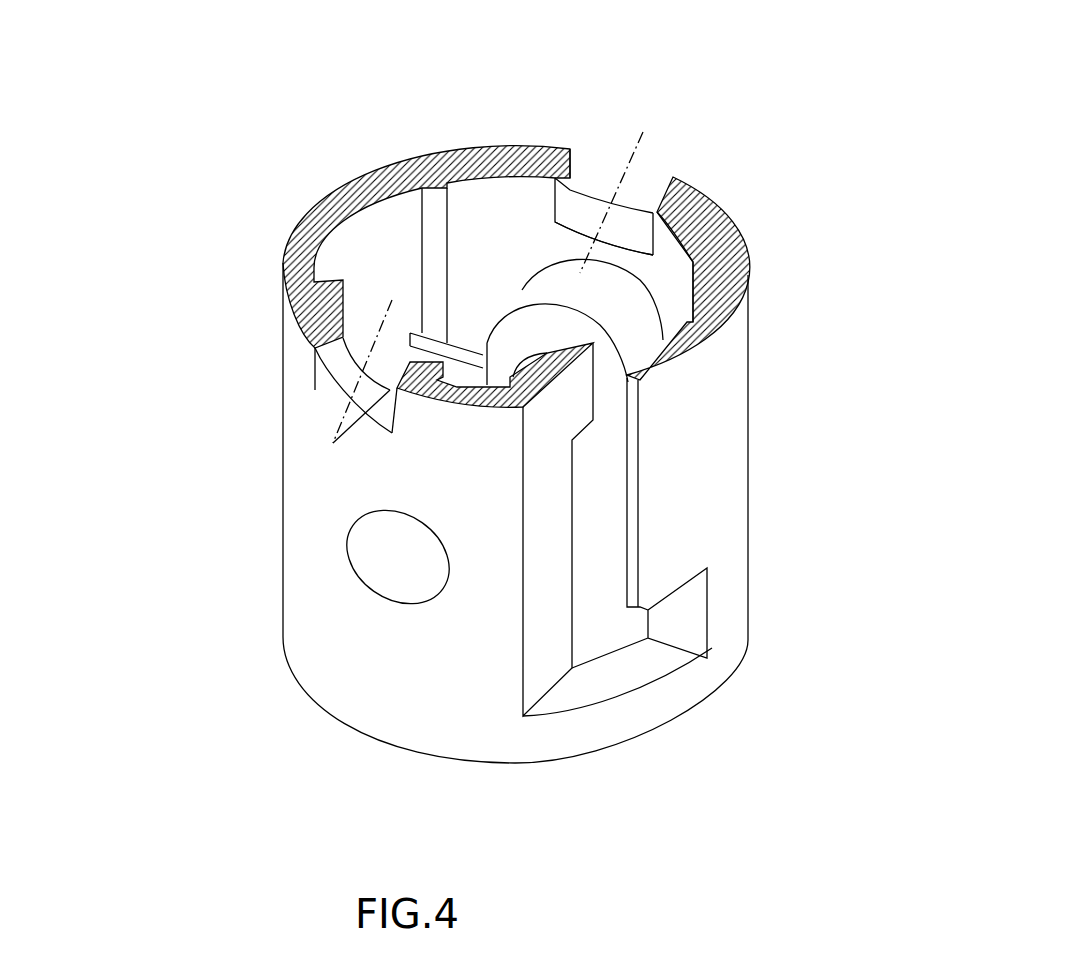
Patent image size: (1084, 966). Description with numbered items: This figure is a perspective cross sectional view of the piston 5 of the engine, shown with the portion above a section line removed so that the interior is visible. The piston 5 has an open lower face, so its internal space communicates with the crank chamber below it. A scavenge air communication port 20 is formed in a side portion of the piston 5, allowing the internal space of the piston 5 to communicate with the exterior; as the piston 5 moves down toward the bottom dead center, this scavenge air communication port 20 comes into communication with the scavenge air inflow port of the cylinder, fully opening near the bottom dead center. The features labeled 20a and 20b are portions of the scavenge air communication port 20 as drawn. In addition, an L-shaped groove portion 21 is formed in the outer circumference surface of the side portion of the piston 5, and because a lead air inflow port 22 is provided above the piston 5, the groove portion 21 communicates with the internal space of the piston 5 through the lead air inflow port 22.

The piston 5 is at (449, 107).
The scavenge air communication port 20 is at (117, 268).
The groove side face 20a is at (567, 183).
The groove bottom face 20b is at (580, 200).
The L-shaped groove portion 21 is at (600, 623).
The lead air inflow port 22 is at (607, 420).